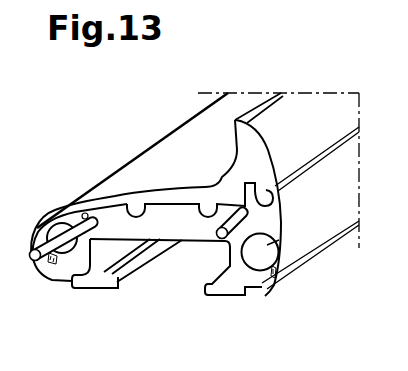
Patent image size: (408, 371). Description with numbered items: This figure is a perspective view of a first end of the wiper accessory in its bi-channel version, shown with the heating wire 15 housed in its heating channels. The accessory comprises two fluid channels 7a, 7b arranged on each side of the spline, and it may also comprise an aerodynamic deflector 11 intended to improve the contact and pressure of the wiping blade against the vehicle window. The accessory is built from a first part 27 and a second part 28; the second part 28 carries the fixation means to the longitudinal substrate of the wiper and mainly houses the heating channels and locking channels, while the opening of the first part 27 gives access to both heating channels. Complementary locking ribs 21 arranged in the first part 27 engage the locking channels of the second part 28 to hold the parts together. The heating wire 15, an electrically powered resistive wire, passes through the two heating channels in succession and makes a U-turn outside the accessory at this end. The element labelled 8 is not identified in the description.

The fluid channel 7a is at (55, 224).
The fluid channel 7b is at (279, 240).
The bore 8 is at (50, 260).
The aerodynamic deflector 11 is at (248, 144).
The heating wire 15 is at (80, 236).
The locking rib 21 is at (137, 204).
The first part 27 is at (150, 164).
The second part 28 is at (192, 252).